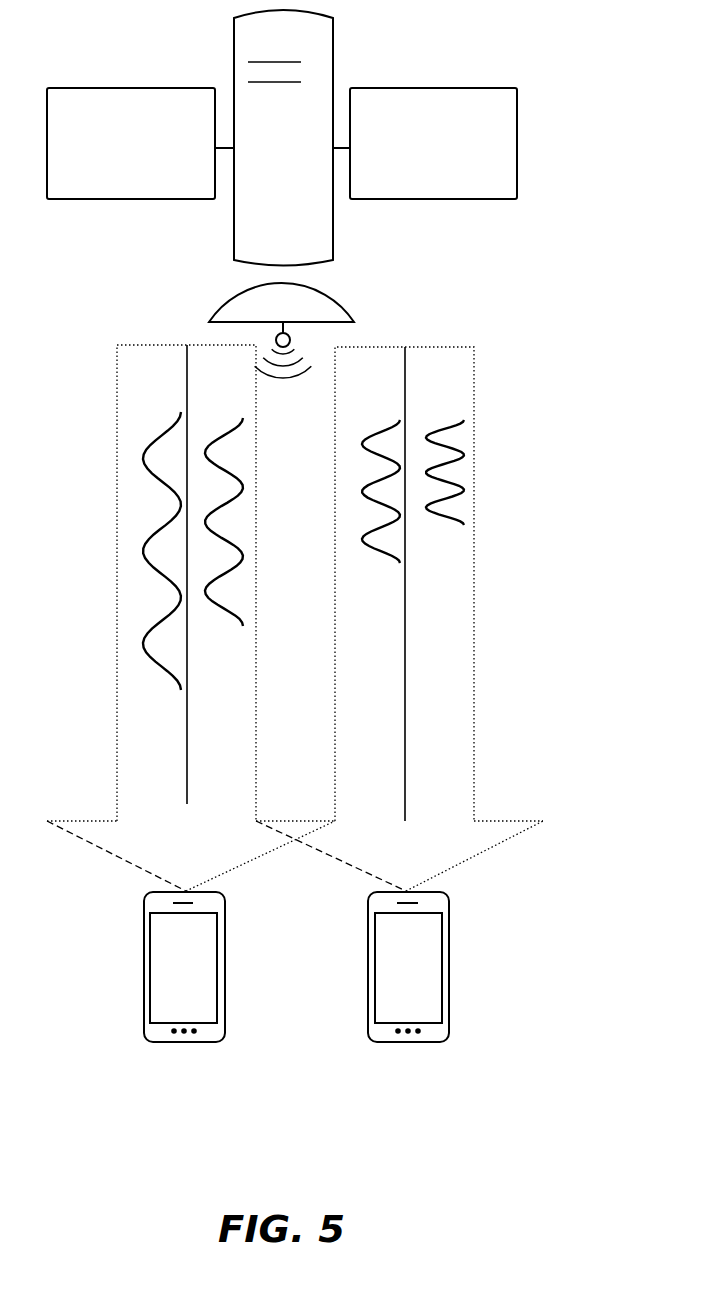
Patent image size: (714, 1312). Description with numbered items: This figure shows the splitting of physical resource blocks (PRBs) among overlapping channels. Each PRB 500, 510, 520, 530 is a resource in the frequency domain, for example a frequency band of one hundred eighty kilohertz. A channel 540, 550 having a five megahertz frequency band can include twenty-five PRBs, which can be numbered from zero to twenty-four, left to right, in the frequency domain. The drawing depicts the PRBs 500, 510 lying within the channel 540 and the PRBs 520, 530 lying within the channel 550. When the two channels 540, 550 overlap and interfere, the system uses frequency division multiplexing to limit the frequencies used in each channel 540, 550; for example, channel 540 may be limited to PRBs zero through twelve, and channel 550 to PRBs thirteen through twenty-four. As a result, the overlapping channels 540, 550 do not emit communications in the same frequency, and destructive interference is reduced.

The physical resource block 500 is at (180, 414).
The physical resource block 510 is at (243, 418).
The physical resource block 520 is at (398, 421).
The physical resource block 530 is at (463, 421).
The channel 540 is at (117, 346).
The channel 550 is at (474, 348).